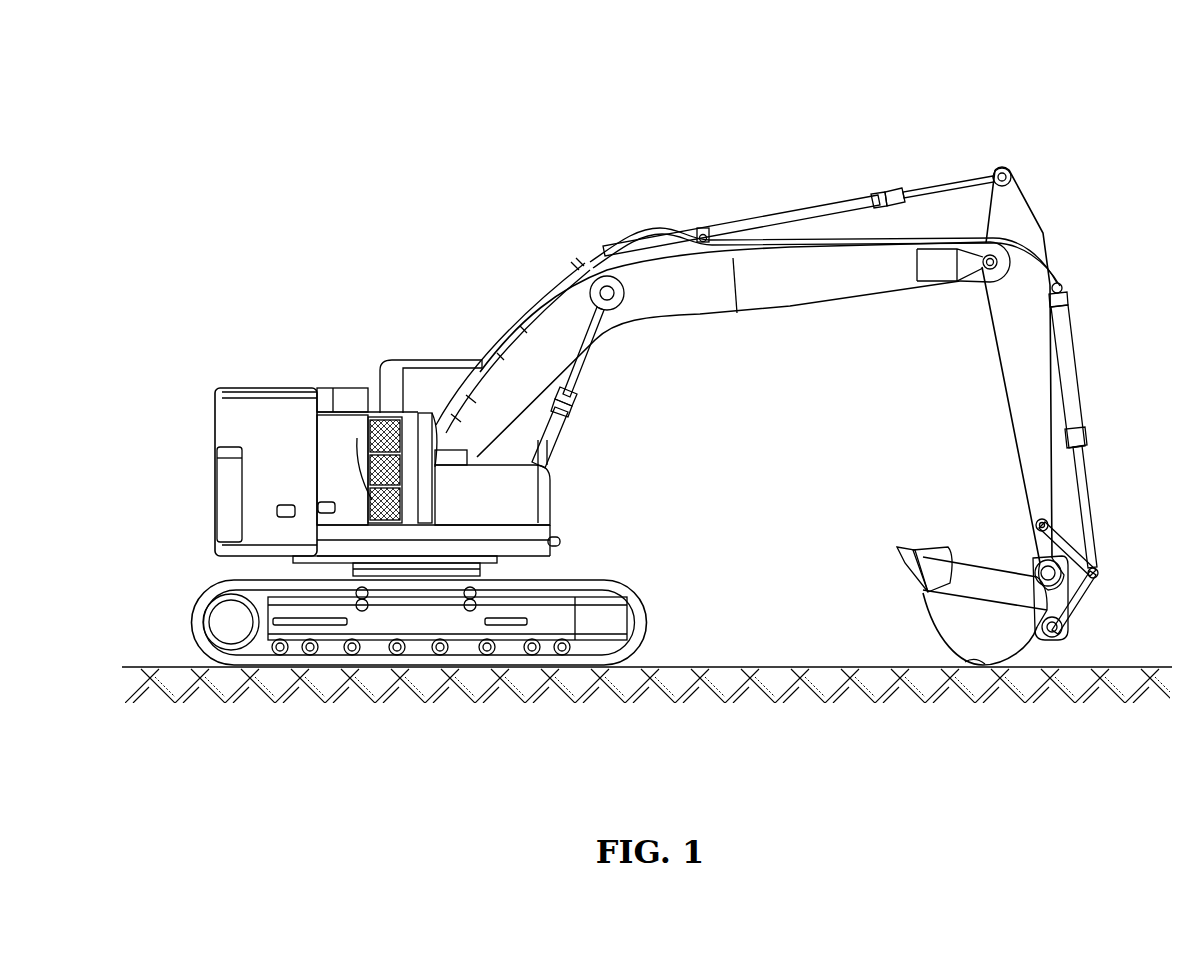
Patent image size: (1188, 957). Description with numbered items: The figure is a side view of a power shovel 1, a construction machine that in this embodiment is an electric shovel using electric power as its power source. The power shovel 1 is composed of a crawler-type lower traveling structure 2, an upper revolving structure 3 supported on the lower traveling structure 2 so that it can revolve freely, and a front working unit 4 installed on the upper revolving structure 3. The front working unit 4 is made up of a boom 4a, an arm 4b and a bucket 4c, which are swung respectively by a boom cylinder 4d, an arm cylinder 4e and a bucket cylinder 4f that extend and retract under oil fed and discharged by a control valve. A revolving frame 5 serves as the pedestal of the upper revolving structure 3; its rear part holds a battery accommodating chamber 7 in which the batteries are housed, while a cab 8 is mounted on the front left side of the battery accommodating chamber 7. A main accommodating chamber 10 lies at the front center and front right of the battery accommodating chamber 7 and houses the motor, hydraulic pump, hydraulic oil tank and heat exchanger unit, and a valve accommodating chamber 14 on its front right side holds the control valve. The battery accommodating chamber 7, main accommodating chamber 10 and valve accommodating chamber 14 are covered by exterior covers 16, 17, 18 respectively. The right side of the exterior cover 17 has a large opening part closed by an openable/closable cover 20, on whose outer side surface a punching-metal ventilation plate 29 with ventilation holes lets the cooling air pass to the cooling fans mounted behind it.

The power shovel 1 is at (540, 154).
The lower traveling structure 2 is at (422, 625).
The upper revolving structure 3 is at (288, 374).
The front working unit 4 is at (921, 149).
The boom 4a is at (797, 288).
The arm 4b is at (1030, 340).
The bucket 4c is at (985, 608).
The boom cylinder 4d is at (567, 370).
The arm cylinder 4e is at (795, 215).
The bucket cylinder 4f is at (1075, 395).
The revolving frame 5 is at (513, 556).
The battery accommodating chamber 7 is at (240, 400).
The cab 8 is at (450, 383).
The main accommodating chamber 10 is at (331, 390).
The valve accommodating chamber 14 is at (487, 493).
The exterior cover 16 is at (272, 415).
The exterior cover 17 is at (425, 412).
The exterior cover 18 is at (515, 503).
The openable/closable cover 20 is at (352, 450).
The ventilation plate 29 is at (369, 470).